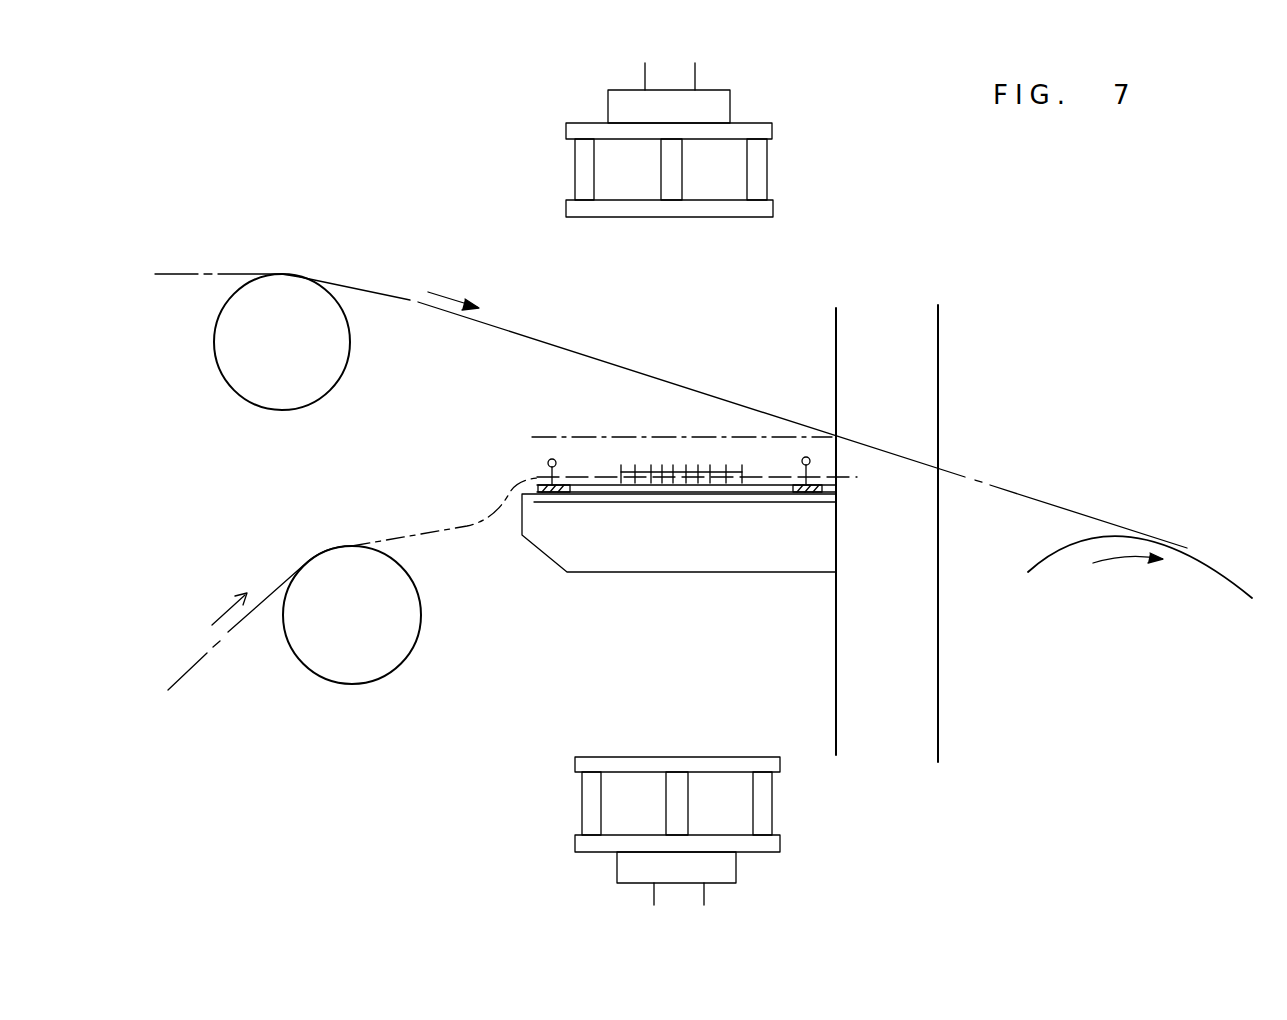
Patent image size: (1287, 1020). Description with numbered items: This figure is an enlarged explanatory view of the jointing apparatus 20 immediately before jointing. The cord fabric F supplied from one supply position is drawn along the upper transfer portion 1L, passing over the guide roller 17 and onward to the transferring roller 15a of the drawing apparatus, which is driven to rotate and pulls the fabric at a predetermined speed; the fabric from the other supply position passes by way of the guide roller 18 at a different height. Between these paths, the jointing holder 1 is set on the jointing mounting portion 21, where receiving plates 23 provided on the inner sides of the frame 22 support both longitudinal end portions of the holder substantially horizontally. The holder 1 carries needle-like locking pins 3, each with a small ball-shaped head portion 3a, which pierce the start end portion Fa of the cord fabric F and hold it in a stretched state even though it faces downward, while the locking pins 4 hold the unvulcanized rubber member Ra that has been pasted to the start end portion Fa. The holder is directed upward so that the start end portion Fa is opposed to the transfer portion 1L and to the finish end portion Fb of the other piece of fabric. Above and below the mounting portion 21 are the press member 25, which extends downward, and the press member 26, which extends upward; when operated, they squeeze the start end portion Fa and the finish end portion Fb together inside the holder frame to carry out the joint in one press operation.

The jointing apparatus 20 is at (493, 166).
The press member 25 is at (737, 173).
The press member 26 is at (746, 803).
The jointing mounting portion 21 is at (821, 462).
The frame 22 is at (920, 373).
The guide roller 17 is at (262, 375).
The guide roller 18 is at (366, 660).
The cord fabric F is at (667, 427).
The transfer portion 1L is at (567, 350).
The transferring roller 15a is at (1183, 560).
The receiving plate 23 is at (610, 552).
The jointing holder 1 is at (553, 492).
The start end portion Fa is at (758, 478).
The finish end portion Fb is at (600, 437).
The locking pin 3 is at (546, 470).
The head portion 3a is at (552, 459).
The locking pin 4 is at (651, 465).
The rubber member Ra is at (697, 473).